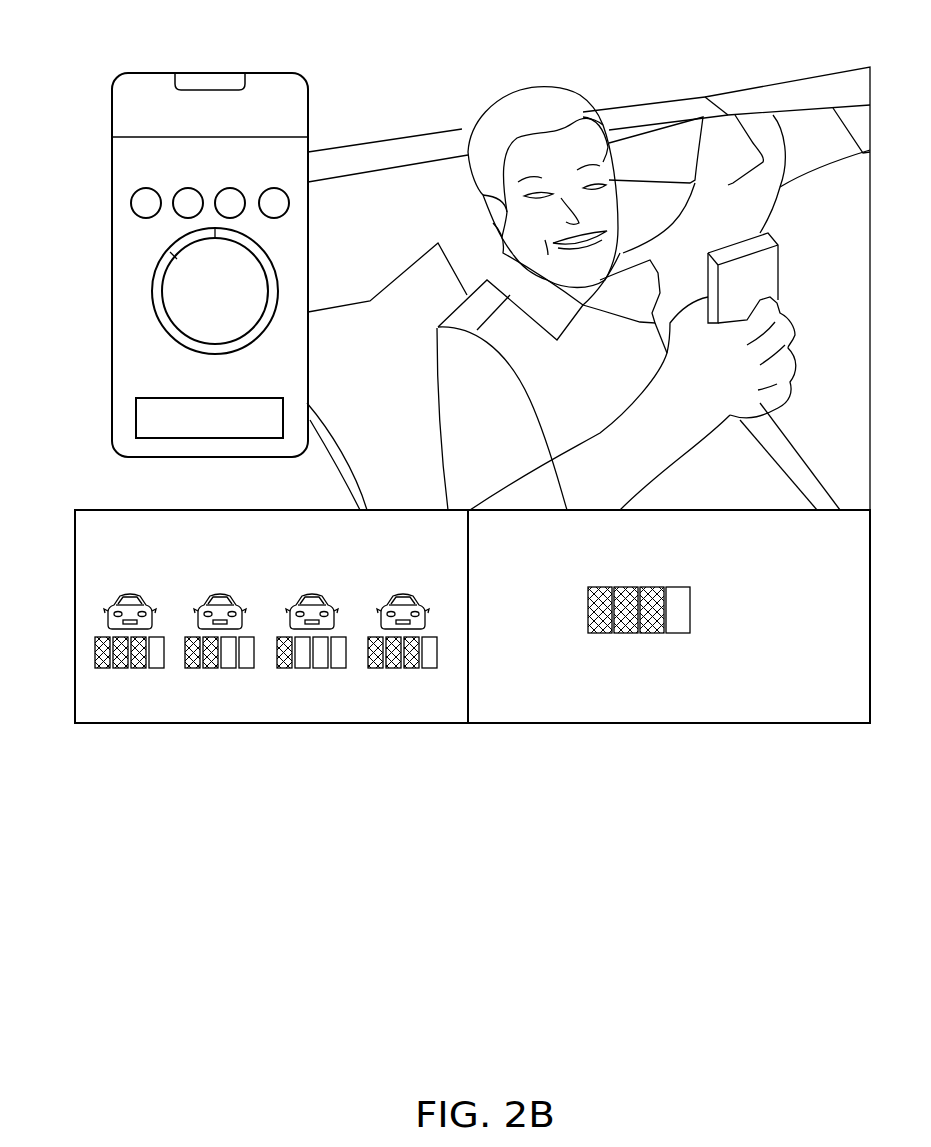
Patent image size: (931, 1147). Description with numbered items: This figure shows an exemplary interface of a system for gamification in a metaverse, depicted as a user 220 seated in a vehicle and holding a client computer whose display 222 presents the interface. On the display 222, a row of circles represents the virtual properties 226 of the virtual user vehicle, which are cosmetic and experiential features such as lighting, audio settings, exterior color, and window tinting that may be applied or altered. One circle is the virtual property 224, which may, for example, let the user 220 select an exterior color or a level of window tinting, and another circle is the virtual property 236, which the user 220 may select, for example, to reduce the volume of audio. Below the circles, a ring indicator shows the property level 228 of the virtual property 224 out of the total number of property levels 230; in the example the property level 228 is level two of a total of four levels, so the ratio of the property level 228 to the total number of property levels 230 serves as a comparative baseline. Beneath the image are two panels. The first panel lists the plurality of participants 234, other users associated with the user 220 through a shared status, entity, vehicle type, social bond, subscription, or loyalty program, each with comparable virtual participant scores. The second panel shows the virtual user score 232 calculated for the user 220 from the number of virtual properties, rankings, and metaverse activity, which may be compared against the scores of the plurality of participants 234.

The user 220 is at (541, 74).
The display 222 is at (268, 155).
The virtual property 224 is at (146, 187).
The virtual properties 226 is at (159, 149).
The property level 228 is at (208, 305).
The total number of property levels 230 is at (238, 305).
The virtual user score 232 is at (661, 702).
The plurality of participants 234 is at (277, 704).
The virtual property 236 is at (187, 186).